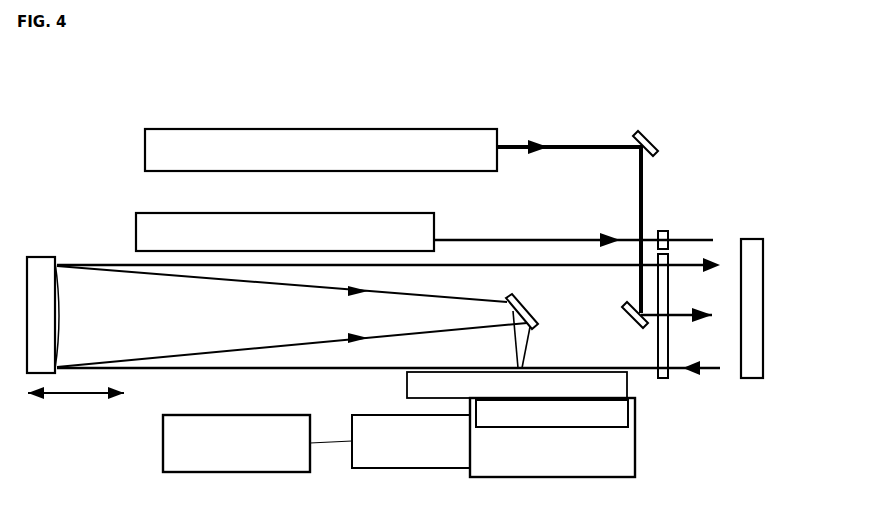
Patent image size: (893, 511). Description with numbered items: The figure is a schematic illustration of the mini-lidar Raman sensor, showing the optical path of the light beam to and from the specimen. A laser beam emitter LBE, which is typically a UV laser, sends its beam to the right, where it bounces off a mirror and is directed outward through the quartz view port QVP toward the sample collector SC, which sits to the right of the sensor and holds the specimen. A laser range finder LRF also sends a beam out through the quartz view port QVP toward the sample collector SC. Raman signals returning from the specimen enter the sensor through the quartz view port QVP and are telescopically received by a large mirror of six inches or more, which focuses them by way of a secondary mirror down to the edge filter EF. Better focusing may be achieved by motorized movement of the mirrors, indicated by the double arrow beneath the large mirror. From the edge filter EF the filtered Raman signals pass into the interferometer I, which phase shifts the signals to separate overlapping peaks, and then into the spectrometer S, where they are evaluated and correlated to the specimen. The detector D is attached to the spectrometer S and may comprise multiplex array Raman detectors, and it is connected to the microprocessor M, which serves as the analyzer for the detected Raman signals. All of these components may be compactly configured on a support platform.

The laser beam emitter LBE is at (321, 150).
The laser range finder LRF is at (285, 232).
The sample collector SC is at (751, 282).
The quartz view port QVP is at (675, 349).
The edge filter EF is at (517, 385).
The interferometer I is at (552, 413).
The spectrometer S is at (552, 437).
The detector D is at (411, 441).
The microprocessor M is at (257, 443).